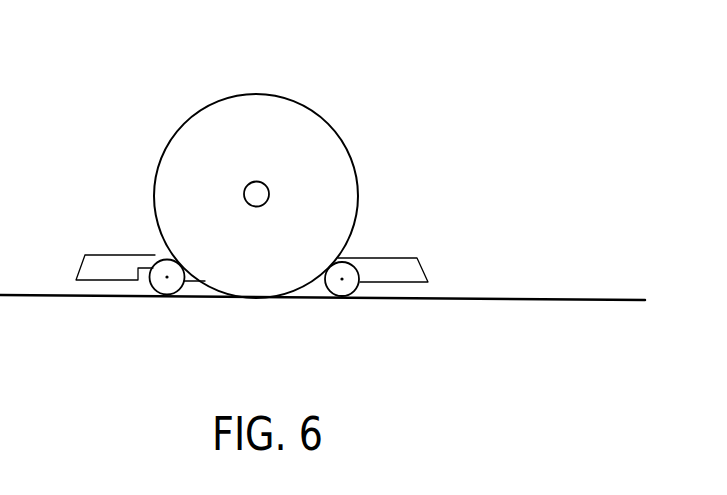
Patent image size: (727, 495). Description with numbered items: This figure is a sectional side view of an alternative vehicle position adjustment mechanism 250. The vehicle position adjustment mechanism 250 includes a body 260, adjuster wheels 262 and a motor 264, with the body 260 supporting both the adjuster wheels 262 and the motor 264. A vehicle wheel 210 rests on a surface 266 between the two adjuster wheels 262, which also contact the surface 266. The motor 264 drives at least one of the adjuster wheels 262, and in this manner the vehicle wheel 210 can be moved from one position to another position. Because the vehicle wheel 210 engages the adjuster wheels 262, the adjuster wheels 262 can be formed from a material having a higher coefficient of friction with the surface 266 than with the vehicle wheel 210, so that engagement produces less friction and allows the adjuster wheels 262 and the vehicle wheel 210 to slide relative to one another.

The vehicle wheel 210 is at (327, 126).
The vehicle position adjustment mechanism 250 is at (299, 263).
The body 260 is at (428, 270).
The adjuster wheels 262 is at (153, 292).
The motor 264 is at (138, 273).
The surface 266 is at (603, 298).